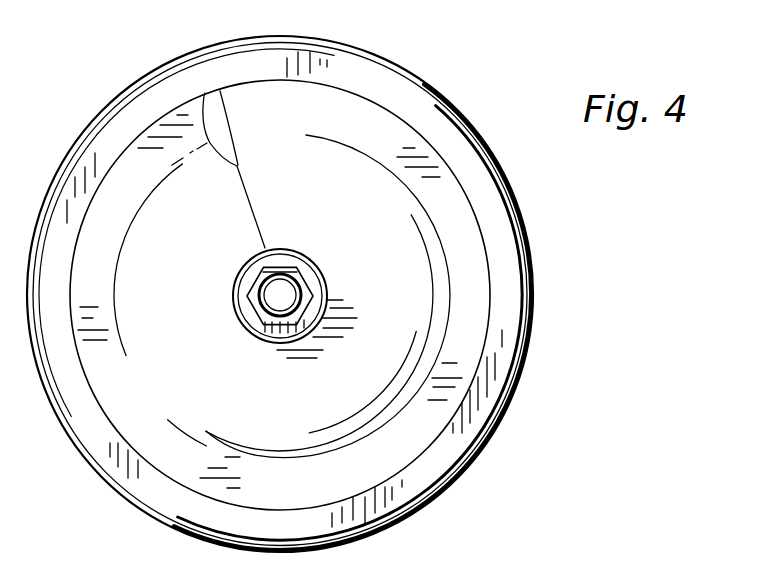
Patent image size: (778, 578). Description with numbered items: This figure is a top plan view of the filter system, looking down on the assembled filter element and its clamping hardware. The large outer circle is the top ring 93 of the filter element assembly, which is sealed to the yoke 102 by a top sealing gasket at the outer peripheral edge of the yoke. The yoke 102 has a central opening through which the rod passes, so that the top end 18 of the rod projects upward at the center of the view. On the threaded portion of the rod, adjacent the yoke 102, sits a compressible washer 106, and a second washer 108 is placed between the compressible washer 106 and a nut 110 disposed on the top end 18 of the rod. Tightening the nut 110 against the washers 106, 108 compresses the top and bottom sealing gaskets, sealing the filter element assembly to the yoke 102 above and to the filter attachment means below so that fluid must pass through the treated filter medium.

The top ring 93 is at (167, 112).
The yoke 102 is at (205, 93).
The compressible washer 106 is at (286, 246).
The second washer 108 is at (247, 277).
The nut 110 is at (300, 283).
The top end of rod 18 is at (278, 301).